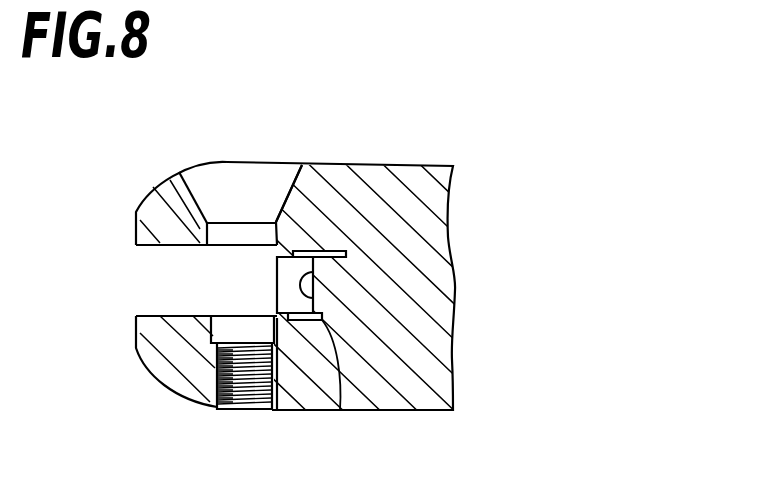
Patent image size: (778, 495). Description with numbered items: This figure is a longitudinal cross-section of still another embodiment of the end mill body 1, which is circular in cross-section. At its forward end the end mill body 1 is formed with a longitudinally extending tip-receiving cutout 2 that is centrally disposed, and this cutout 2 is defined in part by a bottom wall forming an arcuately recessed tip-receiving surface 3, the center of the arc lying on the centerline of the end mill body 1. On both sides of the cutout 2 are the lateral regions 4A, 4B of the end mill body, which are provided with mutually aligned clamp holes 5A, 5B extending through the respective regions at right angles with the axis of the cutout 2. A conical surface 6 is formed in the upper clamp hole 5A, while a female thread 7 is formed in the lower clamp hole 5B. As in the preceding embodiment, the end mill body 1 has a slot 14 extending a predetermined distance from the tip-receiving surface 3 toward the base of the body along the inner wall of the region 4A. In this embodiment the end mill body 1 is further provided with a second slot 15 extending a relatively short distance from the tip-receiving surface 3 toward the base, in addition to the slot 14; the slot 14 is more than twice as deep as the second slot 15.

The end mill body 1 is at (427, 411).
The tip-receiving cutout 2 is at (210, 297).
The tip-receiving surface 3 is at (312, 299).
The lateral region 4A is at (137, 214).
The lateral region 4B is at (137, 337).
The clamp hole 5A is at (155, 190).
The clamp hole 5B is at (210, 350).
The conical surface 6 is at (288, 188).
The female thread 7 is at (250, 388).
The slot 14 is at (338, 251).
The second slot 15 is at (340, 410).